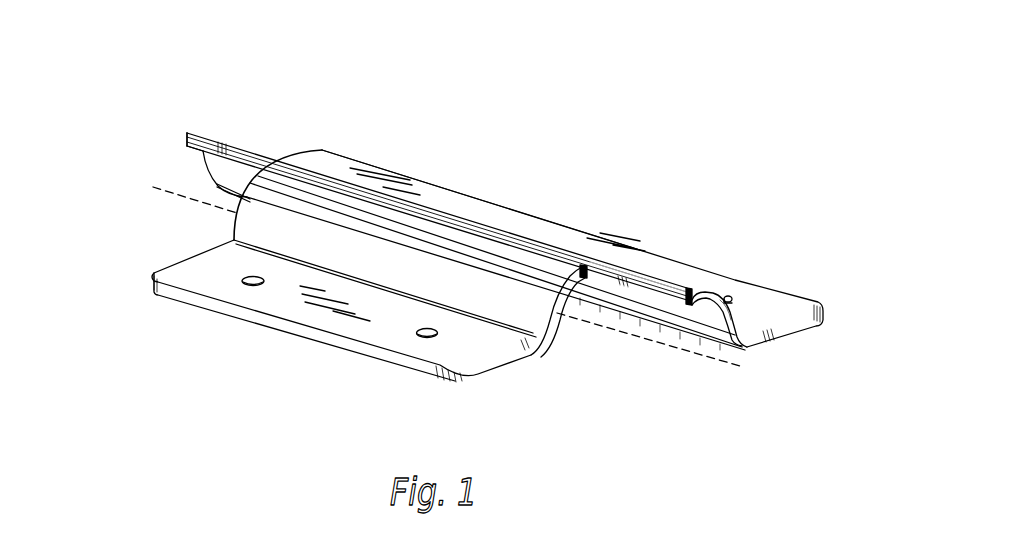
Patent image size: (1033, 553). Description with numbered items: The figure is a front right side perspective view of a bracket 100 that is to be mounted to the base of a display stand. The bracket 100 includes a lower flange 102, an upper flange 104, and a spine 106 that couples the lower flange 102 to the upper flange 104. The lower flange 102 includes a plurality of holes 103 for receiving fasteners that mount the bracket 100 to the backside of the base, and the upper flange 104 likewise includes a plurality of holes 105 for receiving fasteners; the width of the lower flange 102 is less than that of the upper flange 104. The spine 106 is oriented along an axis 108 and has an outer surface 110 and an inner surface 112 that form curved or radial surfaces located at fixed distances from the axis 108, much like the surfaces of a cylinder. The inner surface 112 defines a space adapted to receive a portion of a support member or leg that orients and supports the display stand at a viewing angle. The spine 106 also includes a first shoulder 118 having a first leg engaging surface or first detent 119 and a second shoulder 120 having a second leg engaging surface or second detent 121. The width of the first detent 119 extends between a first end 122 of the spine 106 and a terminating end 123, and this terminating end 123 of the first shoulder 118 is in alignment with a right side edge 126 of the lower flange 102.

The bracket 100 is at (481, 249).
The lower flange 102 is at (308, 309).
The holes 103 is at (250, 284).
The upper flange 104 is at (783, 313).
The holes 105 is at (732, 297).
The spine 106 is at (427, 235).
The axis 108 is at (712, 361).
The outer surface 110 is at (261, 227).
The inner surface 112 is at (688, 306).
The first shoulder 118 is at (645, 273).
The first leg engaging surface 119 is at (641, 291).
The second shoulder 120 is at (221, 137).
The second leg engaging surface 121 is at (207, 146).
The first end 122 is at (731, 320).
The terminating end 123 is at (582, 278).
The right side edge 126 is at (500, 360).